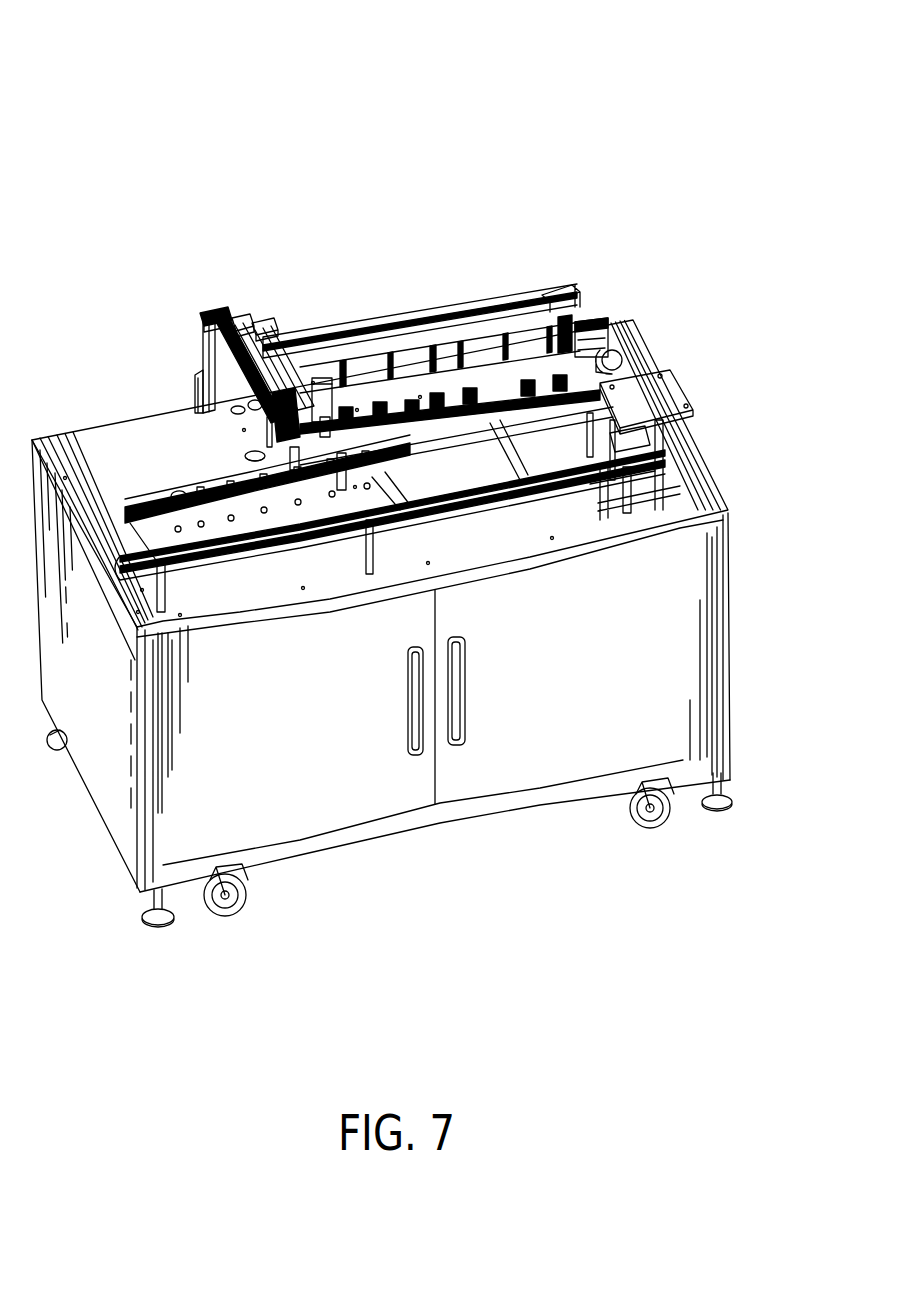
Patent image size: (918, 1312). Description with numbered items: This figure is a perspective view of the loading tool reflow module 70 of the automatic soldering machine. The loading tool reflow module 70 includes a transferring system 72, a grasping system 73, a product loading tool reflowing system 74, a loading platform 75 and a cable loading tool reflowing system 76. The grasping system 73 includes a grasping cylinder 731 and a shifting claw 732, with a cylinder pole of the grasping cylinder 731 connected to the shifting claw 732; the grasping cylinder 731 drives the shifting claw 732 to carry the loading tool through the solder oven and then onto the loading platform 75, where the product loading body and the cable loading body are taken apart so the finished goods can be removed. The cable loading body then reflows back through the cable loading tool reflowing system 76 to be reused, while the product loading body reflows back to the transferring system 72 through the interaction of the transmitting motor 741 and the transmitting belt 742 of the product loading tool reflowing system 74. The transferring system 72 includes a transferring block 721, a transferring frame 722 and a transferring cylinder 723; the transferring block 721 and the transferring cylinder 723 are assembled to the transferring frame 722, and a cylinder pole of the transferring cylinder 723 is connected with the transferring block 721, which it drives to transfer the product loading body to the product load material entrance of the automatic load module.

The loading tool reflow module 70 is at (125, 52).
The transferring system 72 is at (220, 318).
The transferring block 721 is at (267, 327).
The transferring frame 722 is at (193, 393).
The transferring cylinder 723 is at (207, 343).
The grasping system 73 is at (482, 357).
The grasping cylinder 731 is at (603, 367).
The shifting claw 732 is at (408, 400).
The product loading tool reflowing system 74 is at (573, 287).
The transmitting motor 741 is at (602, 323).
The transmitting belt 742 is at (510, 293).
The loading platform 75 is at (663, 387).
The cable loading tool reflowing system 76 is at (643, 463).